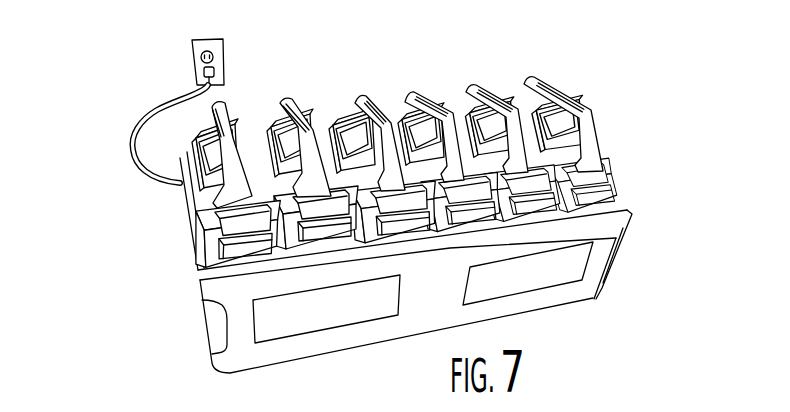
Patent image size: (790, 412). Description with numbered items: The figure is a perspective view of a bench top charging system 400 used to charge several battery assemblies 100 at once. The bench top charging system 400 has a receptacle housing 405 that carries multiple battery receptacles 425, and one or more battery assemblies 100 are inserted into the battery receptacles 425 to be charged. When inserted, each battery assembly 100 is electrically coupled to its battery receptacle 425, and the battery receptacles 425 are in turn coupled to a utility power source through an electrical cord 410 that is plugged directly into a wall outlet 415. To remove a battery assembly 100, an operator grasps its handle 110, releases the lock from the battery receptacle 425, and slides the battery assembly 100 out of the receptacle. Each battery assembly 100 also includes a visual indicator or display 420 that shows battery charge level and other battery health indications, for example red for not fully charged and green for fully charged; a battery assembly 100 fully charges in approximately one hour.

The battery assembly 100 is at (230, 198).
The handle 110 is at (225, 118).
The bench top charging system 400 is at (373, 188).
The receptacle housing 405 is at (590, 294).
The electrical cord 410 is at (131, 152).
The wall outlet 415 is at (222, 58).
The visual indicator or display 420 is at (218, 247).
The battery receptacle 425 is at (218, 227).